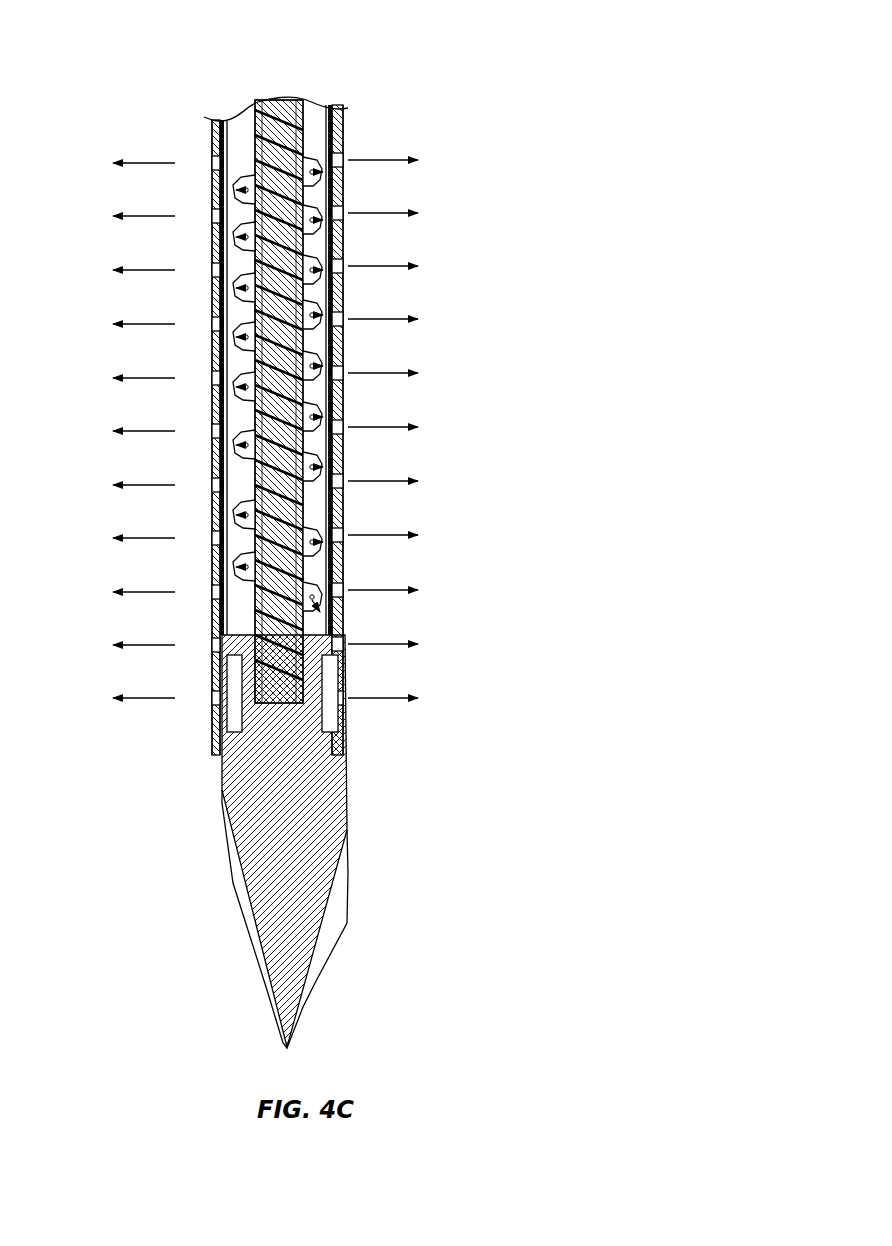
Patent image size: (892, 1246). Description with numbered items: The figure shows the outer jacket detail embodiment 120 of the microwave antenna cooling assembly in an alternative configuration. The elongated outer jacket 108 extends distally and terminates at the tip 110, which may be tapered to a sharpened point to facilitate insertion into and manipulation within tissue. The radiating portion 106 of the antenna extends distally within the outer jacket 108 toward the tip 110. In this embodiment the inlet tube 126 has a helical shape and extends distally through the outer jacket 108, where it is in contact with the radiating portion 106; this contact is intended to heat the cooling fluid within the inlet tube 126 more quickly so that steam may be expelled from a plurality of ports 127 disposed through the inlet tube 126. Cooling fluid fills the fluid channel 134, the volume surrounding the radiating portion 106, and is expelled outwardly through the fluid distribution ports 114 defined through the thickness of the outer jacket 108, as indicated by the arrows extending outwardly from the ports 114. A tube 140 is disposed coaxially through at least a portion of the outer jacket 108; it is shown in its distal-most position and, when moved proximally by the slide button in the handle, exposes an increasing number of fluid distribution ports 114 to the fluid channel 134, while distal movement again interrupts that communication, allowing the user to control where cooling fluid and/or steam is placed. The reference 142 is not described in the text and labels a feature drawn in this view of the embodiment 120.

The outer jacket detail embodiment 120 is at (480, 48).
The inlet tube 126 is at (210, 138).
The ports 127 is at (341, 130).
The fluid distribution ports 114 is at (211, 215).
The fluid channel 134 is at (344, 247).
The outer jacket 108 is at (344, 300).
The tube 140 is at (212, 350).
The outflow direction 142 is at (194, 409).
The radiating portion 106 is at (345, 558).
The tip 110 is at (300, 815).